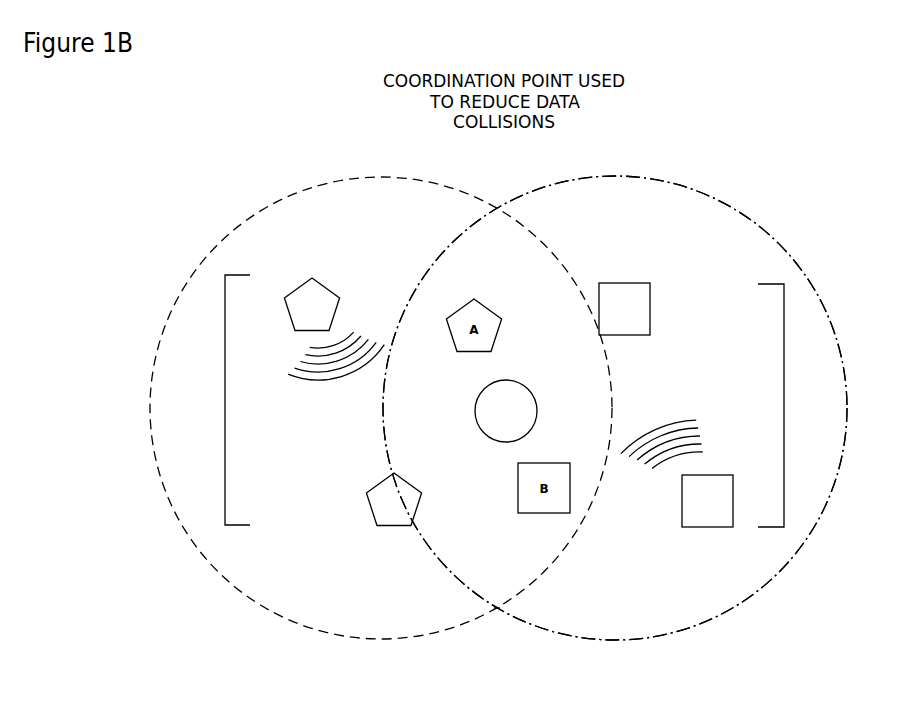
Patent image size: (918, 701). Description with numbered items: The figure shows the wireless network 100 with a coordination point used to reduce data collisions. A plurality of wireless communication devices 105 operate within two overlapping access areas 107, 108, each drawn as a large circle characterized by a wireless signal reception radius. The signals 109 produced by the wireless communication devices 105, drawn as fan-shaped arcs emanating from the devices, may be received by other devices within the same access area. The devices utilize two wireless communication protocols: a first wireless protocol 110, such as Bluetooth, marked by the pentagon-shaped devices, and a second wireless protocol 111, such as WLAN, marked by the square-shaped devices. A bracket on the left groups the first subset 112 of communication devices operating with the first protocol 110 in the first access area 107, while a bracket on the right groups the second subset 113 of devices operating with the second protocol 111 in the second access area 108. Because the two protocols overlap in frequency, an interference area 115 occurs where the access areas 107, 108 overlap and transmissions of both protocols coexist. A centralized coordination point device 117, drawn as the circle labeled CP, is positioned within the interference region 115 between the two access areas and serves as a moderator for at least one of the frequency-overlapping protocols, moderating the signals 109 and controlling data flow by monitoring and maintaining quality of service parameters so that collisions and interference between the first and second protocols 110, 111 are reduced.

The wireless network 100 is at (733, 178).
The wireless communication devices 105 is at (361, 508).
The first access area 107 is at (219, 577).
The second access area 108 is at (790, 258).
The signals 109 is at (283, 361).
The first wireless protocol 110 is at (326, 300).
The second wireless protocol 111 is at (686, 514).
The first subset 112 is at (225, 405).
The second subset 113 is at (784, 412).
The interference area 115 is at (502, 588).
The centralized coordination point device 117 is at (540, 414).